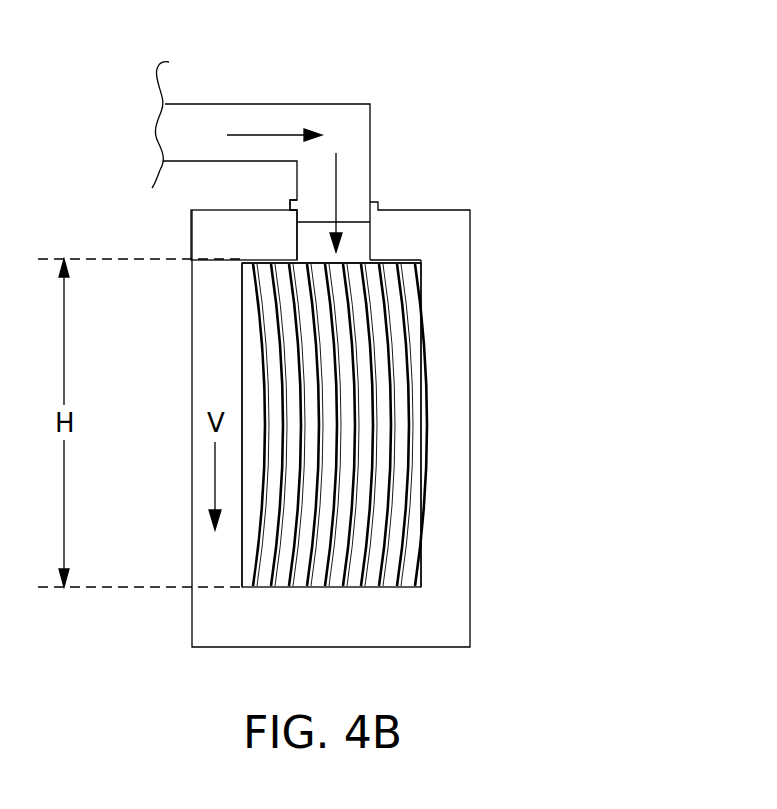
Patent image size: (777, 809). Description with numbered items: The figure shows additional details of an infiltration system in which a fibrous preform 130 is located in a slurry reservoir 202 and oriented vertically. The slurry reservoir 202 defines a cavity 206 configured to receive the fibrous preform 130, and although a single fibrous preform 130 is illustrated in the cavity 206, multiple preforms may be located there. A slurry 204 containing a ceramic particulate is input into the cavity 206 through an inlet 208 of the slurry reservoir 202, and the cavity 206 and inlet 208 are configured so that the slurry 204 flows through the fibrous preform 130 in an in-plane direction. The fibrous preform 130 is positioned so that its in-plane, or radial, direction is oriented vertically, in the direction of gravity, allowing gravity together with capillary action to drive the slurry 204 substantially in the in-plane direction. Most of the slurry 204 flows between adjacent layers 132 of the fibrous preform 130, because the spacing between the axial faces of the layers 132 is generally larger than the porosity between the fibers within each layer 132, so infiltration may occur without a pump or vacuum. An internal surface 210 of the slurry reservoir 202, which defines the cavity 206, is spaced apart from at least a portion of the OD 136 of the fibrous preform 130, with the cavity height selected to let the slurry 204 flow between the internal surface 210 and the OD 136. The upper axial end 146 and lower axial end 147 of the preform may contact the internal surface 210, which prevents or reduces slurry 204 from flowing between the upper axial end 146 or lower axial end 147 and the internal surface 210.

The slurry 204 is at (238, 133).
The slurry reservoir 202 is at (464, 221).
The cavity 206 is at (229, 256).
The inlet 208 is at (282, 212).
The OD 136 is at (387, 246).
The fibrous preform 130 is at (374, 425).
The layers 132 is at (412, 372).
The upper axial end 146 is at (245, 369).
The lower axial end 147 is at (418, 317).
The internal surface 210 is at (402, 262).